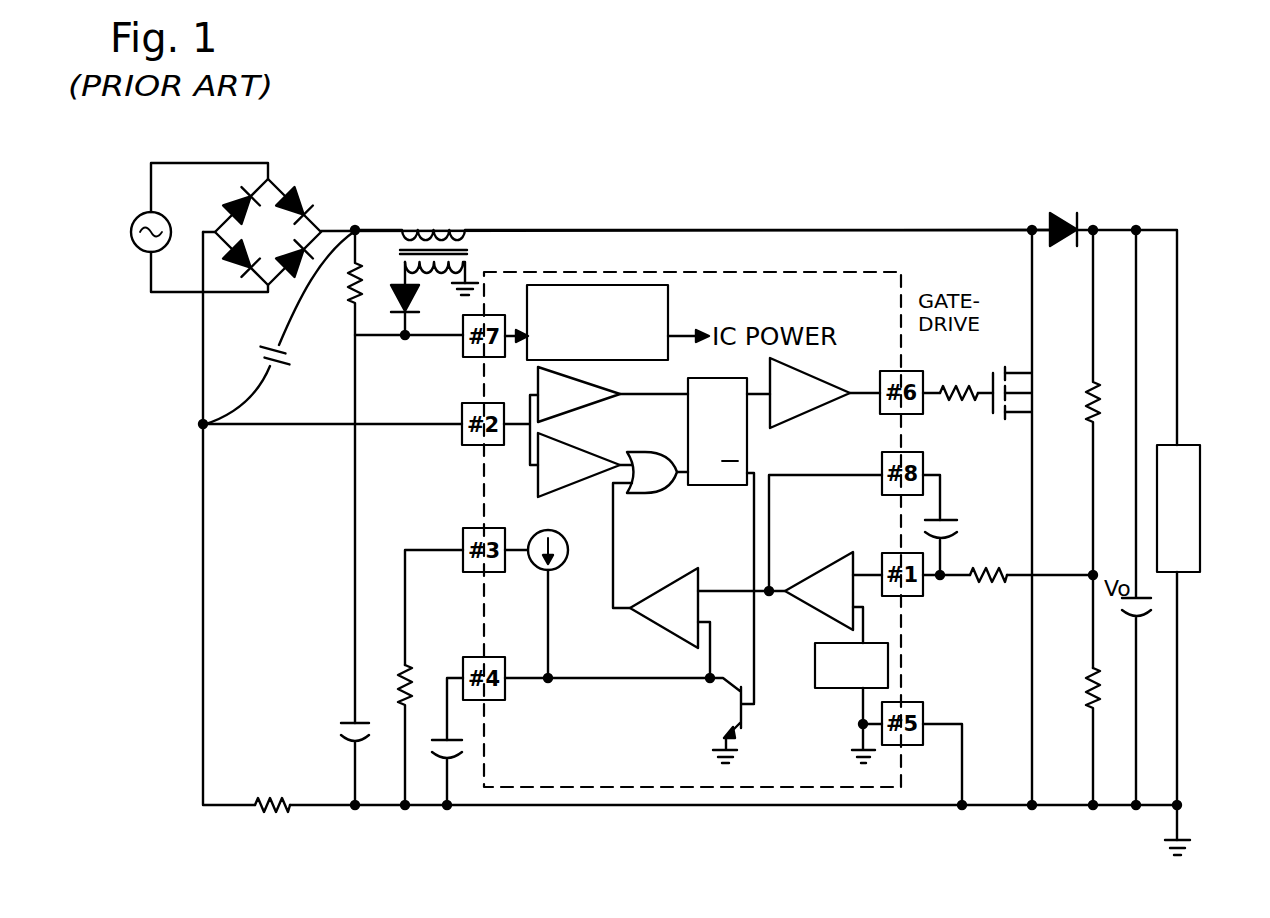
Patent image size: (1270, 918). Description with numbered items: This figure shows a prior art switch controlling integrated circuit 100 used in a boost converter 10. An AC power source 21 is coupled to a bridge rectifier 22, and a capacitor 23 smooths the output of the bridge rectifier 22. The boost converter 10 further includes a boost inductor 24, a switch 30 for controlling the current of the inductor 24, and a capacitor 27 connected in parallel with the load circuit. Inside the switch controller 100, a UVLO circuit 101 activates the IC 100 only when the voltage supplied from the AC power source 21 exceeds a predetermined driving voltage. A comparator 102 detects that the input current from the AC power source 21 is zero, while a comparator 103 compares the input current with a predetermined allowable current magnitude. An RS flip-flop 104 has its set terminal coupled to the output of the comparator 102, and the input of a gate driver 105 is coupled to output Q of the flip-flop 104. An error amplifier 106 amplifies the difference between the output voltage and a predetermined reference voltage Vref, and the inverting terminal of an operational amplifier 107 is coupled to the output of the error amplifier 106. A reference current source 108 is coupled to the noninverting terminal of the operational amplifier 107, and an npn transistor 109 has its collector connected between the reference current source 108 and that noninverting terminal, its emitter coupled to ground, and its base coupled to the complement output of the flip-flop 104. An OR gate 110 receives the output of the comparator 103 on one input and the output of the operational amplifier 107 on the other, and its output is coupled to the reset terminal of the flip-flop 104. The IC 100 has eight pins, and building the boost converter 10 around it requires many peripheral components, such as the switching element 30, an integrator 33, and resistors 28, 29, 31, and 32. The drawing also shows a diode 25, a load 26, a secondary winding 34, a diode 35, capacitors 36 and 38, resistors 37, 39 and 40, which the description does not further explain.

The boost converter 10 is at (917, 154).
The AC power source 21 is at (129, 225).
The bridge rectifier 22 is at (270, 178).
The capacitor 23 is at (277, 373).
The boost inductor 24 is at (437, 226).
The output rectifier diode 25 is at (1063, 213).
The load 26 is at (1192, 445).
The capacitor 27 is at (1140, 615).
The resistor 28 is at (1086, 396).
The resistor 29 is at (1089, 697).
The switch 30 is at (1018, 371).
The resistor 31 is at (972, 399).
The resistor 32 is at (981, 582).
The integrator 33 is at (951, 520).
The transformer auxiliary winding 34 is at (466, 272).
The auxiliary rectifier diode 35 is at (392, 296).
The timing capacitor 36 is at (434, 740).
The timing resistor 37 is at (401, 668).
The bias capacitor 38 is at (348, 723).
The start-up resistor 39 is at (346, 282).
The current sense resistor 40 is at (292, 809).
The switch controlling integrated circuit 100 is at (833, 272).
The UVLO circuit 101 is at (668, 313).
The comparator 102 is at (586, 381).
The comparator 103 is at (568, 440).
The RS flip-flop 104 is at (747, 435).
The gate driver 105 is at (820, 376).
The error amplifier 106 is at (810, 574).
The operational amplifier 107 is at (672, 582).
The reference current source 108 is at (568, 551).
The npn transistor 109 is at (739, 701).
The OR gate 110 is at (637, 494).